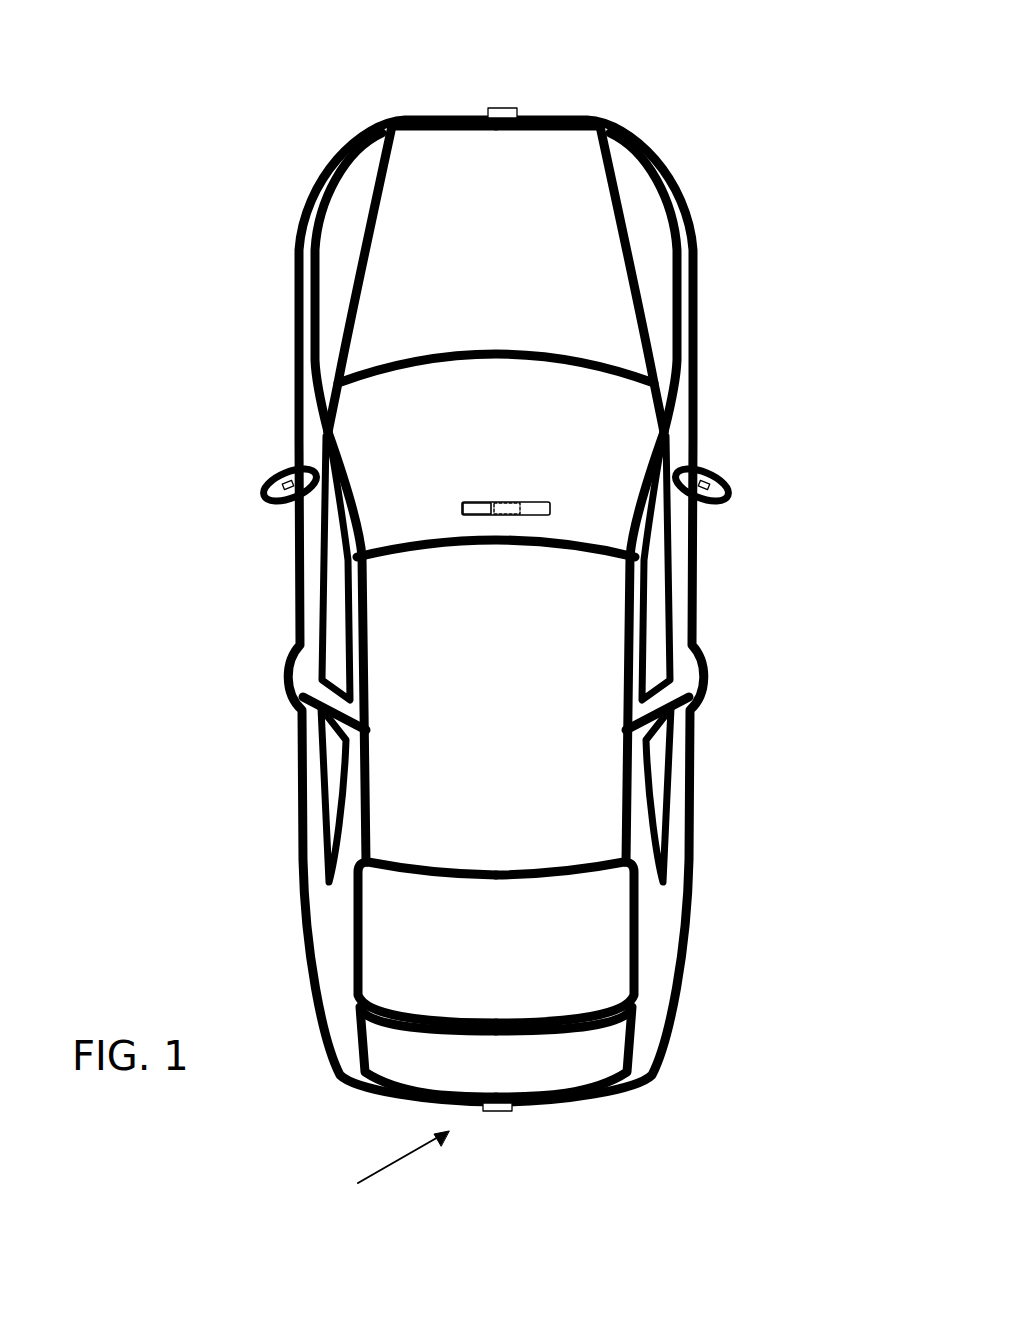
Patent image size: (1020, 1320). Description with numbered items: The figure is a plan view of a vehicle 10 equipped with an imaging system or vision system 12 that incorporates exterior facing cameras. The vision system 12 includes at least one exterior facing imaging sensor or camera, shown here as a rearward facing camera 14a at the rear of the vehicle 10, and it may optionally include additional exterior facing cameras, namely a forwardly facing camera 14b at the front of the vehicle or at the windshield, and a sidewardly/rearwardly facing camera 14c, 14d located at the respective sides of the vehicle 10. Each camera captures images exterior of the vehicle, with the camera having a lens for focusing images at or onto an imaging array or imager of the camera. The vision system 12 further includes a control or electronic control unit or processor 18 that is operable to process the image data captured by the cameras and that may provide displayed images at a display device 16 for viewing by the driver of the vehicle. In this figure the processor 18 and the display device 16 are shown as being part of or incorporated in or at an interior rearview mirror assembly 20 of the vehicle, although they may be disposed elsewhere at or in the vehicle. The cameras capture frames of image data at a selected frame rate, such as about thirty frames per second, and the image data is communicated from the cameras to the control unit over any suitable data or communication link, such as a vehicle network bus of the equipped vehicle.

The vehicle 10 is at (248, 212).
The vision system 12 is at (386, 1169).
The rearward facing camera 14a is at (503, 1112).
The forwardly facing camera 14b is at (506, 108).
The sidewardly/rearwardly facing camera 14c is at (286, 481).
The sidewardly/rearwardly facing camera 14d is at (712, 479).
The display device 16 is at (480, 503).
The electronic control unit 18 is at (502, 500).
The interior rearview mirror assembly 20 is at (548, 501).